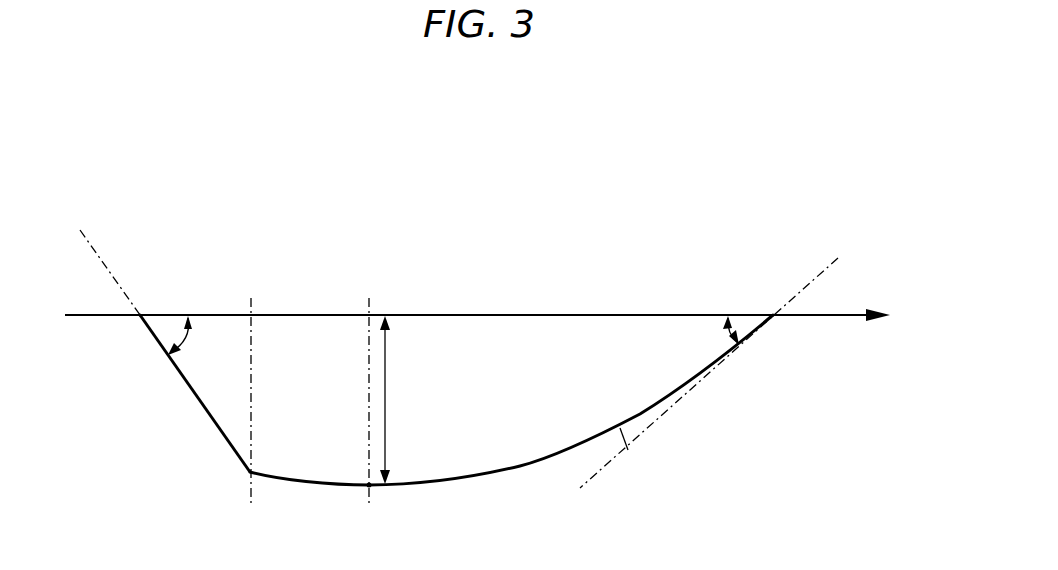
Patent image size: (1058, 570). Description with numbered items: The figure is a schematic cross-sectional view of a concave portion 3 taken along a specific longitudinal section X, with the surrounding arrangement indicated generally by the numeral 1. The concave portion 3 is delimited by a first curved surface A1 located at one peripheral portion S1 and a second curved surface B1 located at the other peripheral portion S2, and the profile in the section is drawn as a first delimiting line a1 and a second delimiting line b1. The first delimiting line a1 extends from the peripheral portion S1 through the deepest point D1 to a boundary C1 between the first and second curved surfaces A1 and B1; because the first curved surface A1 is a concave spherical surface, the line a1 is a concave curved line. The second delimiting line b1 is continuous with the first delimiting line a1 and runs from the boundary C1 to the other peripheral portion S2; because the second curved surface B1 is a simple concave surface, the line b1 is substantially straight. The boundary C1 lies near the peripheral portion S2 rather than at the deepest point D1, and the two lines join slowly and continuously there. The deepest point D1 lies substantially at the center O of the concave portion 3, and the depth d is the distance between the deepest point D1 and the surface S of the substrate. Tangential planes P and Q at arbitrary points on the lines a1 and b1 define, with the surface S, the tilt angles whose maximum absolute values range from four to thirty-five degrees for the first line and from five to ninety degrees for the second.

The valve seat / workpiece 1 is at (742, 168).
The concave portion 3 is at (636, 402).
The specific longitudinal section X is at (477, 303).
The center of the concave portion O is at (380, 395).
The depth of the concave portion d is at (393, 400).
The tangential plane Q is at (112, 274).
The other peripheral portion S2 is at (142, 315).
The second curved surface B1 is at (208, 426).
The second delimiting line b1 is at (183, 378).
The boundary C1 is at (251, 474).
The deepest point D1 is at (372, 488).
The first curved surface A1 is at (547, 462).
The first delimiting line a1 is at (628, 450).
The tangential plane P is at (670, 412).
The surface of the substrate S is at (825, 315).
The one peripheral portion S1 is at (773, 314).